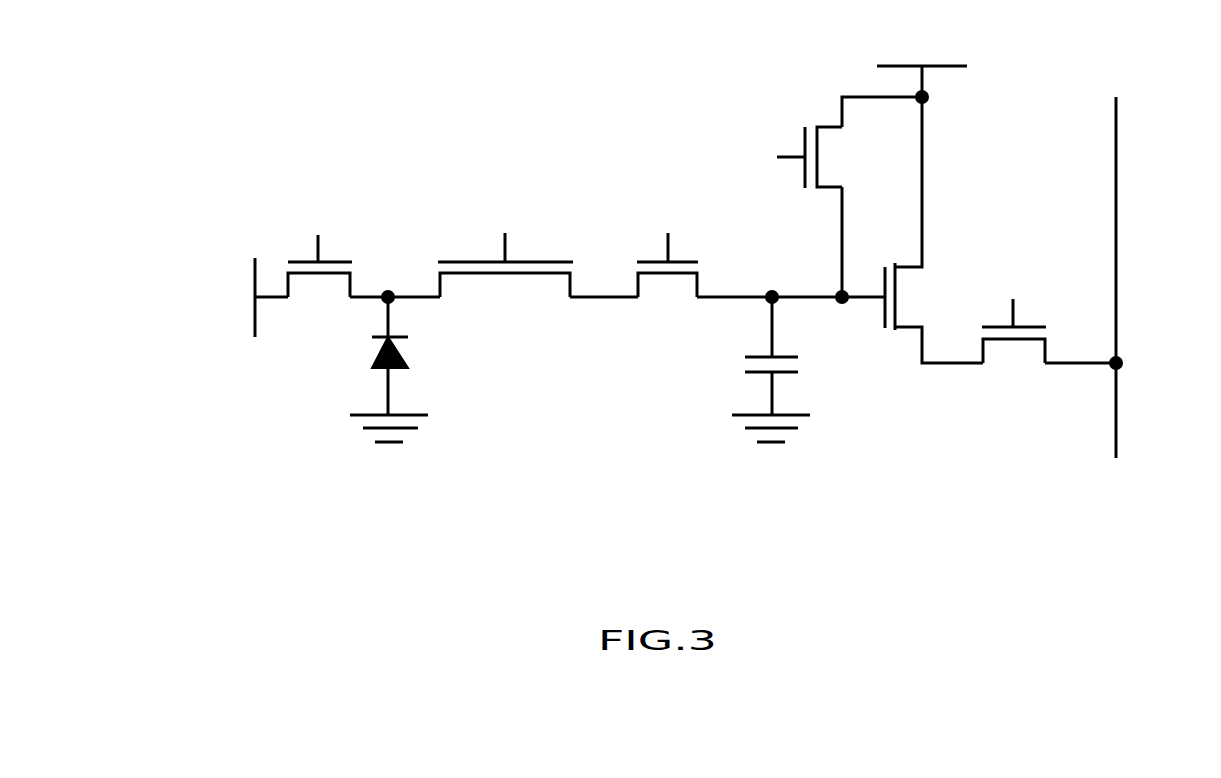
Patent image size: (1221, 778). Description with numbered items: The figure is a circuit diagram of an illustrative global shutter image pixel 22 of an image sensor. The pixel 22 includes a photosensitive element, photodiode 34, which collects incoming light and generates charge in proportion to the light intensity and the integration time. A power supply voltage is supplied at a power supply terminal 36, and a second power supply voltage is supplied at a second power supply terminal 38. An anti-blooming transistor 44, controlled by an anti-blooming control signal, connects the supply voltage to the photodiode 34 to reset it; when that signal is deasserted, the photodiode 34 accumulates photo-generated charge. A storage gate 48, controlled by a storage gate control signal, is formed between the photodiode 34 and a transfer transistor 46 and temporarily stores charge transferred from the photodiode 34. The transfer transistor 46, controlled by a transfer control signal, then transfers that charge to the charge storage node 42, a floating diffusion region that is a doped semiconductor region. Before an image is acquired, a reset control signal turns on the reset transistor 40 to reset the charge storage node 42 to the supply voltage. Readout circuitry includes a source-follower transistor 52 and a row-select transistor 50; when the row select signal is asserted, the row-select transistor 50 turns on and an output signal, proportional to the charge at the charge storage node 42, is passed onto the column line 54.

The image pixel 22 is at (292, 122).
The photodiode 34 is at (442, 378).
The power supply terminal 36 is at (968, 72).
The second power supply terminal 38 is at (248, 260).
The reset transistor 40 is at (825, 118).
The charge storage node 42 is at (755, 337).
The anti-blooming transistor 44 is at (358, 260).
The transfer transistor 46 is at (657, 300).
The storage gate 48 is at (450, 215).
The row-select transistor 50 is at (1010, 352).
The source-follower transistor 52 is at (902, 260).
The column line 54 is at (1116, 190).